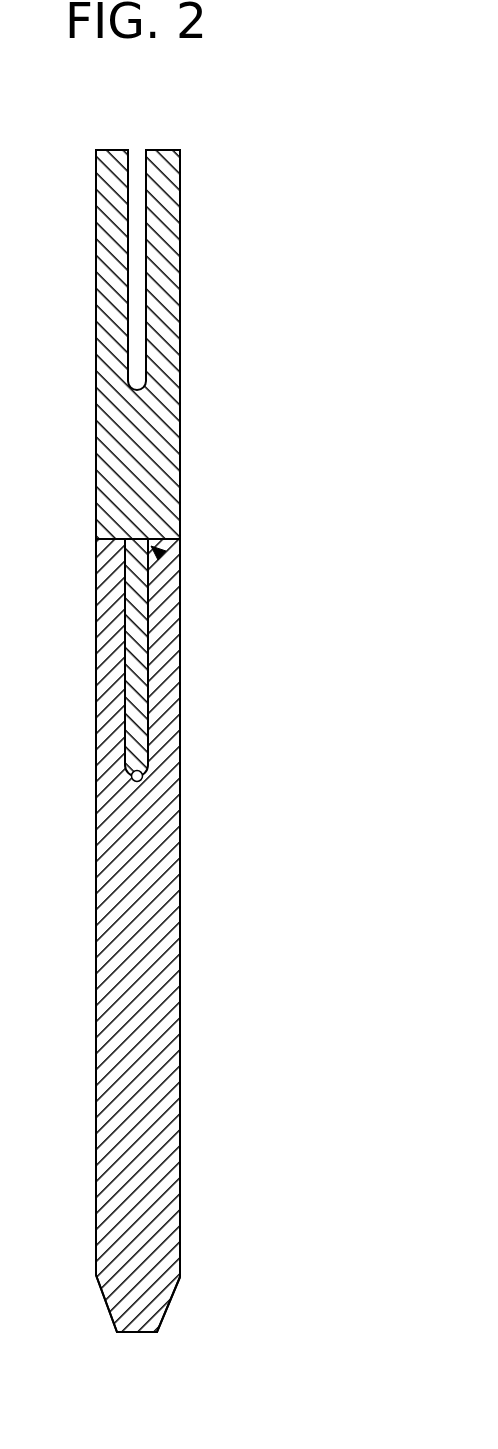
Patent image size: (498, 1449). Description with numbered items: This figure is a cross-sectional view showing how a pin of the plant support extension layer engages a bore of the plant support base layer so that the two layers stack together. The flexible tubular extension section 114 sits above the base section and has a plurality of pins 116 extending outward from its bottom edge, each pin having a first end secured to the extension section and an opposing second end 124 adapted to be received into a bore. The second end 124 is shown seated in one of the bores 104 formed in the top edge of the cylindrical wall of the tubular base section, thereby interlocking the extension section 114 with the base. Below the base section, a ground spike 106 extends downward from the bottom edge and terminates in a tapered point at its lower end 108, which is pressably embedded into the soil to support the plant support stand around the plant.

The bore 104 is at (160, 556).
The ground spike 106 is at (180, 1010).
The distal tip 108 is at (143, 1310).
The flexible tubular extension section 114 is at (180, 346).
The pin 116 is at (140, 614).
The second end of pin 124 is at (141, 775).